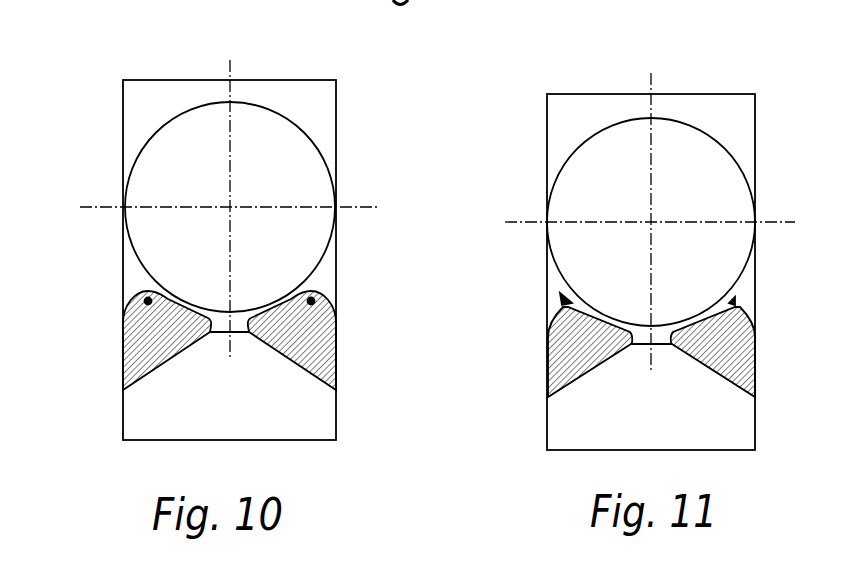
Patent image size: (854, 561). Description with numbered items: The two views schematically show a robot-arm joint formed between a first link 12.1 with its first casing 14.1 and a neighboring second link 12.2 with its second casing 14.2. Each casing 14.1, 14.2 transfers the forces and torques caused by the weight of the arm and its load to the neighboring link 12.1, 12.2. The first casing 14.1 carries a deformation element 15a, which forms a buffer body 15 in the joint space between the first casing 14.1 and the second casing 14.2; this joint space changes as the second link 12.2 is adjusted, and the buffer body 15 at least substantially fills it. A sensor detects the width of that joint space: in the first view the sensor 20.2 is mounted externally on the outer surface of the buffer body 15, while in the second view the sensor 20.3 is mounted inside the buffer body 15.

In FIG. 10, the first link 12.1 is at (321, 275).
In FIG. 11, the first link 12.1 is at (629, 272).
In FIG. 10, the first casing 14.1 is at (310, 420).
In FIG. 11, the first casing 14.1 is at (567, 415).
In FIG. 10, the second link 12.2 is at (329, 175).
In FIG. 11, the second link 12.2 is at (631, 203).
In FIG. 10, the second casing 14.2 is at (292, 110).
In FIG. 11, the second casing 14.2 is at (565, 125).
In FIG. 10, the buffer body 15 is at (315, 340).
In FIG. 11, the buffer body 15 is at (631, 352).
In FIG. 10, the deformation element 15a is at (337, 322).
In FIG. 11, the deformation element 15a is at (552, 332).
In FIG. 10, the sensor 20.2 is at (321, 288).
In FIG. 11, the sensor 20.3 is at (562, 301).